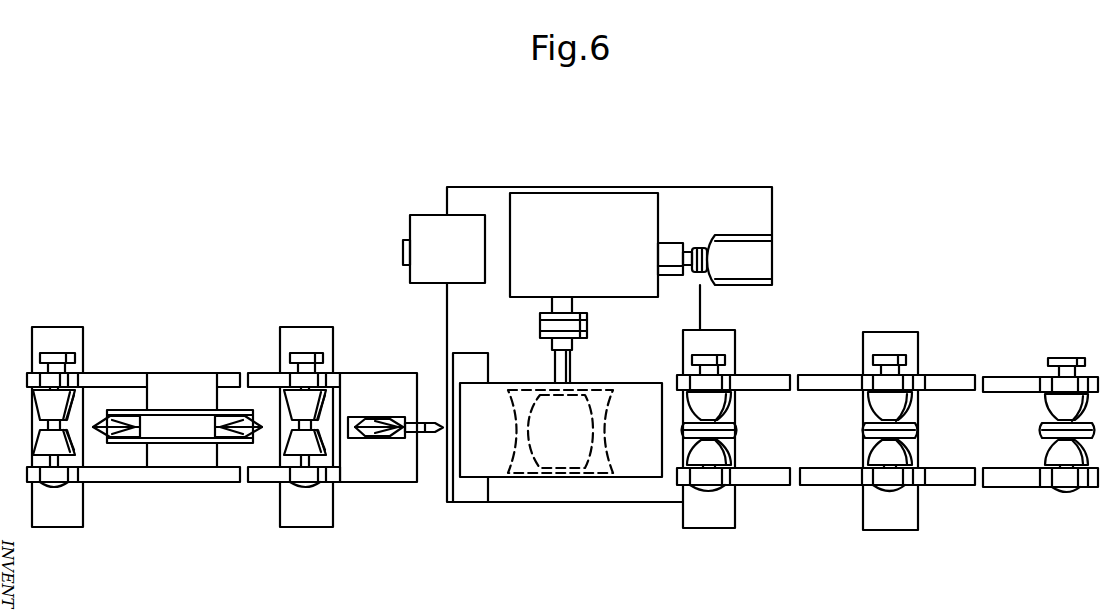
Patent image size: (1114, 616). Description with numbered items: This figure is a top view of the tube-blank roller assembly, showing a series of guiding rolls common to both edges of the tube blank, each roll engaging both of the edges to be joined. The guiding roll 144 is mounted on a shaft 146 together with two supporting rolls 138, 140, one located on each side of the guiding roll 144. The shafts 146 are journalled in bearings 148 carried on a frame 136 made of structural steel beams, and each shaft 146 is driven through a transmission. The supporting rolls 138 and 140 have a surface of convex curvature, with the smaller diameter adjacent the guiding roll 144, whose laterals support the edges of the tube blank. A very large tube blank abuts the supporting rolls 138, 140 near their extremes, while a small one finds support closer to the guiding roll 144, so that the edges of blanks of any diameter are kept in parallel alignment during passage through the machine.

The frame 136 is at (820, 478).
The supporting roll 138 is at (880, 410).
The supporting roll 140 is at (876, 456).
The guiding roll 144 is at (875, 430).
The shaft 146 is at (722, 366).
The bearing 148 is at (896, 383).